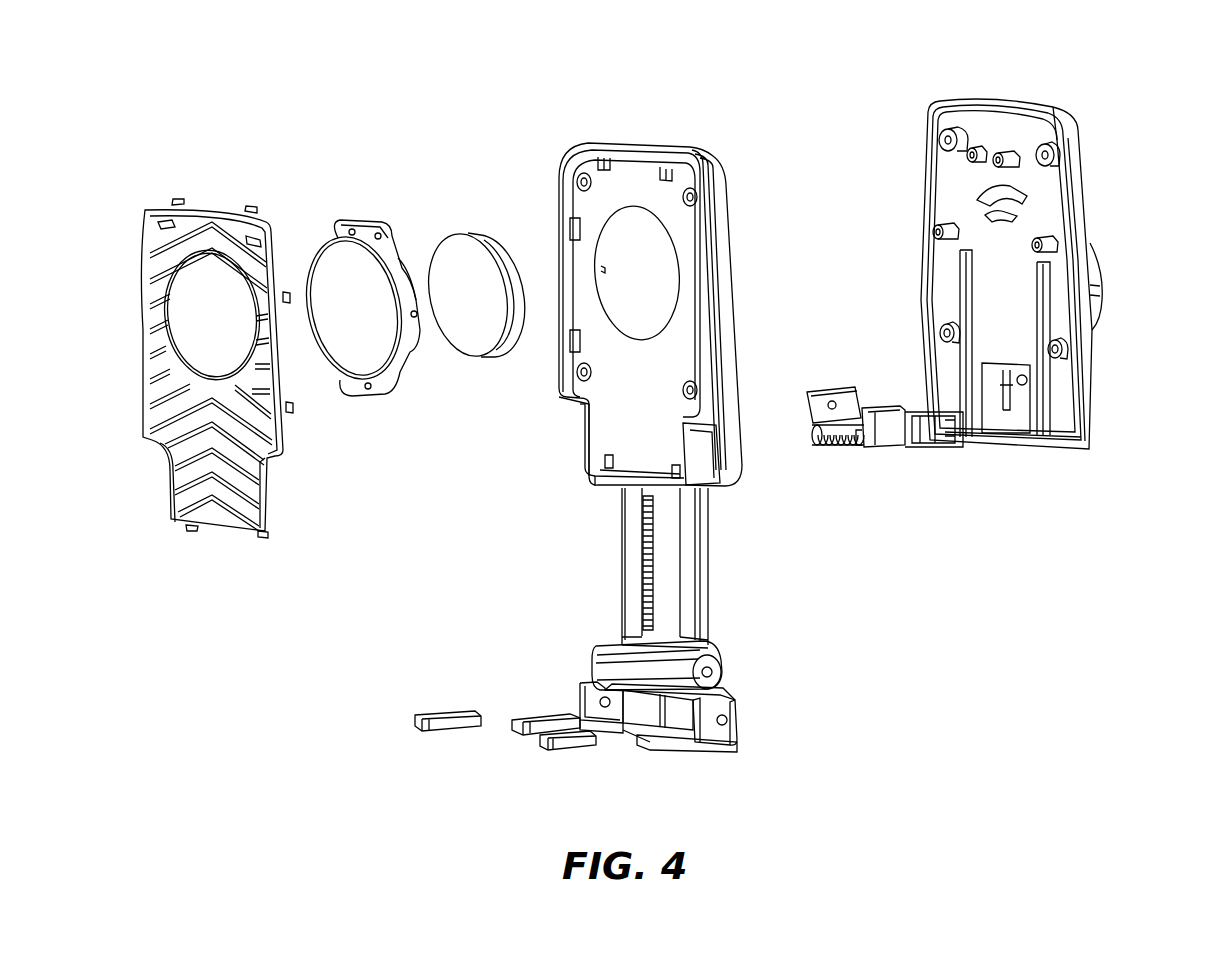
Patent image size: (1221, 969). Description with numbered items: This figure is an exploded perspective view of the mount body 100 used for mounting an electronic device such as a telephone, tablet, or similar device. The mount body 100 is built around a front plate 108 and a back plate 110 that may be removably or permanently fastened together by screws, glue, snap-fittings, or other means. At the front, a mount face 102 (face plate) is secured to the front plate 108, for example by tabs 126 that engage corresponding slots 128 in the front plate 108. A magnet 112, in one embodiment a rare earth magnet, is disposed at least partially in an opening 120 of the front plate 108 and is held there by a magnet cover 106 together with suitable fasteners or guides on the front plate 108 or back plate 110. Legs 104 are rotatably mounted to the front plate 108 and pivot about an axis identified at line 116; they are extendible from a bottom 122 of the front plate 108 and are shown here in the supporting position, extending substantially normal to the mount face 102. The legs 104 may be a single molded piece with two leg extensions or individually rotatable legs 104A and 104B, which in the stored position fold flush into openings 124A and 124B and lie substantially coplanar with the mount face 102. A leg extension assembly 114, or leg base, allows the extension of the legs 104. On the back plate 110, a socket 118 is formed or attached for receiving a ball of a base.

The mount body 100 is at (1135, 127).
The mount face 102 is at (165, 210).
The legs 104 is at (720, 740).
The individual leg 104A is at (520, 722).
The individual leg 104B is at (668, 750).
The magnet cover 106 is at (342, 215).
The front plate 108 is at (586, 140).
The back plate 110 is at (923, 166).
The magnet 112 is at (467, 230).
The leg extension assembly 114 is at (712, 547).
The axis line 116 is at (560, 652).
The socket 118 is at (1100, 270).
The opening 120 is at (637, 212).
The bottom 122 is at (600, 495).
The opening 124A is at (578, 423).
The opening 124B is at (708, 440).
The tabs 126 is at (248, 207).
The slots 128 is at (604, 152).